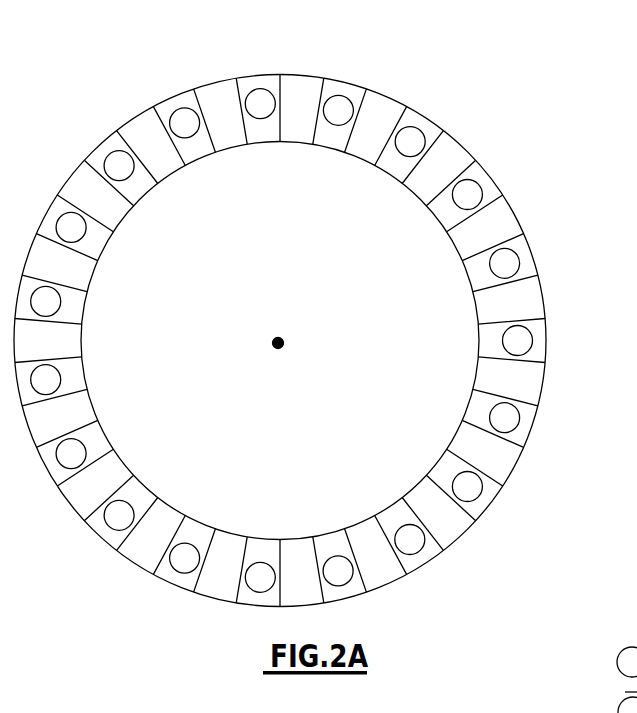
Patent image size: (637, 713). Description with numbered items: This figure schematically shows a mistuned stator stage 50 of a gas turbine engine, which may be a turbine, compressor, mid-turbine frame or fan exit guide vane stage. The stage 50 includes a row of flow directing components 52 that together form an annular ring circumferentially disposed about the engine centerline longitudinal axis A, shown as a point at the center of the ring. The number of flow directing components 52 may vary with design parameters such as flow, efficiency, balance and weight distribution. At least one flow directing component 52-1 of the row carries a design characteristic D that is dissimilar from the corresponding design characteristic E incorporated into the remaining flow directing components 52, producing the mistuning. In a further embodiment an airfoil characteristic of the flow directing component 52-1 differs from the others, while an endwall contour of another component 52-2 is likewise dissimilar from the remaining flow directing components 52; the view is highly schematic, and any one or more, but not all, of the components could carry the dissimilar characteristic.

The stage 50 is at (182, 70).
The flow directing component 52 is at (491, 177).
The flow directing component 52-1 is at (346, 82).
The component 52-2 is at (428, 115).
The engine centerline longitudinal axis A is at (283, 344).